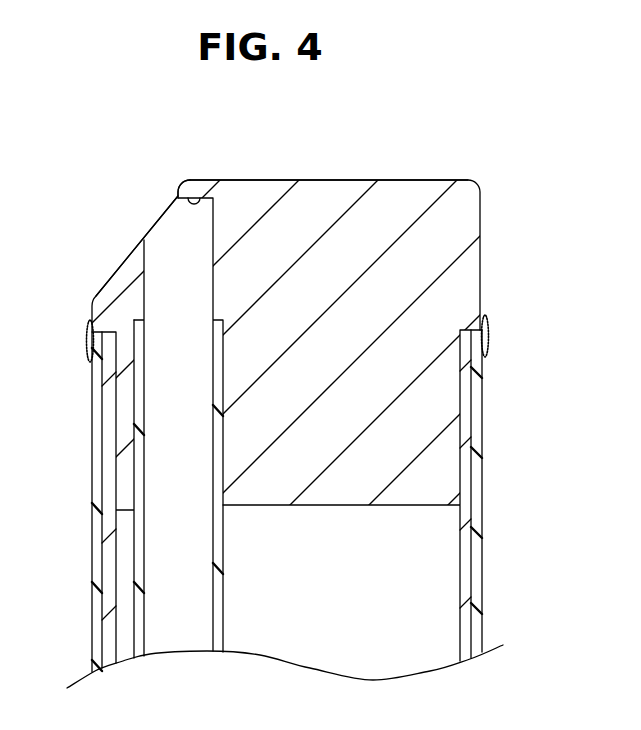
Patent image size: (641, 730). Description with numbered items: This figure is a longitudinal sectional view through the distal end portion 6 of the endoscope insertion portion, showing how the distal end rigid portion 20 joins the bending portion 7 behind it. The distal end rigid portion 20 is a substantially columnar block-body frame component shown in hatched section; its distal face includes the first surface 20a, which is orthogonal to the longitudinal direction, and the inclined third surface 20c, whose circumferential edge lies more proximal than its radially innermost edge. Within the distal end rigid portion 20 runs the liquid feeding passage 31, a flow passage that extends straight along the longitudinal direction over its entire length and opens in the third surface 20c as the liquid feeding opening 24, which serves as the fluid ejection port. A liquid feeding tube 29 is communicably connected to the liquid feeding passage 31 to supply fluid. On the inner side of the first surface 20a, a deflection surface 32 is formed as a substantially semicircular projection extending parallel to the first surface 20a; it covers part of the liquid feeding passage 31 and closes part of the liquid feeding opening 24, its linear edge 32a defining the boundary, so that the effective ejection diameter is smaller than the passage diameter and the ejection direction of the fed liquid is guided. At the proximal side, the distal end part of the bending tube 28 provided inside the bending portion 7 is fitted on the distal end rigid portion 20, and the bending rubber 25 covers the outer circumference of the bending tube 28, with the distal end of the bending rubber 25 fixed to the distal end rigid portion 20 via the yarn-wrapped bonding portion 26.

The distal end portion 6 is at (407, 154).
The bending portion 7 is at (516, 556).
The distal end rigid portion 20 is at (481, 246).
The first surface 20a is at (340, 180).
The third surface 20c is at (116, 281).
The liquid feeding opening 24 is at (148, 218).
The bending rubber 25 is at (98, 449).
The yarn-wrapped bonding portion 26 is at (87, 345).
The bending tube 28 is at (115, 534).
The liquid feeding tube 29 is at (142, 617).
The liquid feeding passage 31 is at (160, 302).
The deflection surface 32 is at (203, 198).
The linear edge 32a is at (172, 198).